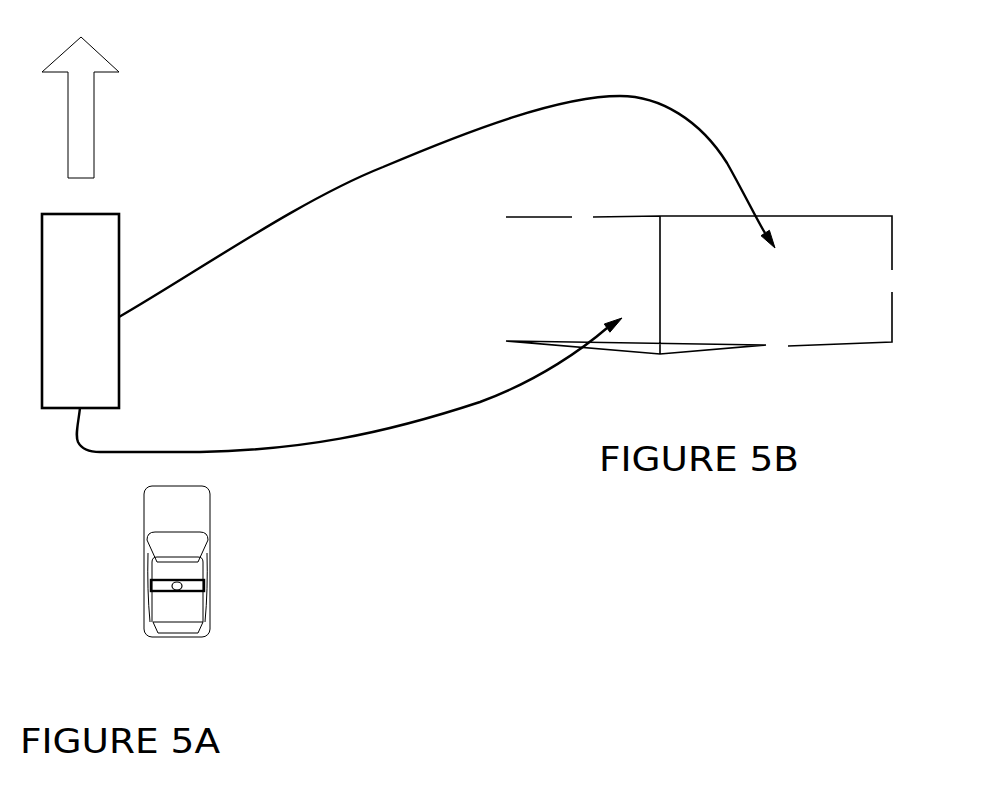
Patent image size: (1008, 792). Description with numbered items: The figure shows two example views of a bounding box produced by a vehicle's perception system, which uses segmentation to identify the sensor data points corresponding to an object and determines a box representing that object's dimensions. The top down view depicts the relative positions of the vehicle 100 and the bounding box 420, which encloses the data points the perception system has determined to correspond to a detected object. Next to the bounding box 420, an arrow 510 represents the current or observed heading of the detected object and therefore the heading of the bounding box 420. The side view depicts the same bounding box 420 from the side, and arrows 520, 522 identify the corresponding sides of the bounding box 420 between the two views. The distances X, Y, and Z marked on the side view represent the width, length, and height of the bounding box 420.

In FIG. 5A, the vehicle 100 is at (210, 585).
In FIG. 5A, the bounding box 420 is at (120, 343).
In FIG. 5B, the bounding box 420 is at (505, 293).
In FIG. 5A, the arrow 510 is at (94, 137).
In FIG. 5B, the arrow 520 is at (483, 400).
In FIG. 5B, the arrow 522 is at (748, 192).